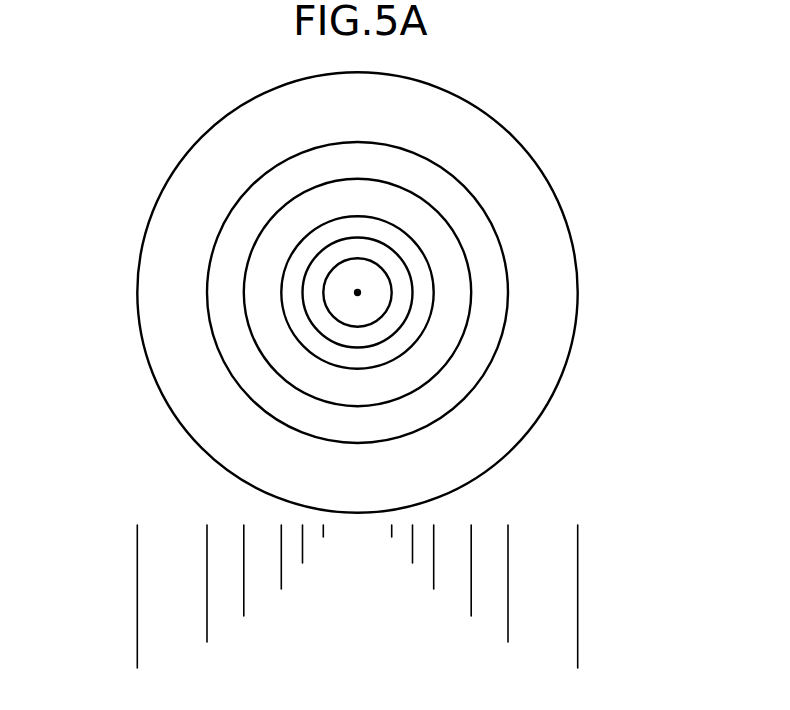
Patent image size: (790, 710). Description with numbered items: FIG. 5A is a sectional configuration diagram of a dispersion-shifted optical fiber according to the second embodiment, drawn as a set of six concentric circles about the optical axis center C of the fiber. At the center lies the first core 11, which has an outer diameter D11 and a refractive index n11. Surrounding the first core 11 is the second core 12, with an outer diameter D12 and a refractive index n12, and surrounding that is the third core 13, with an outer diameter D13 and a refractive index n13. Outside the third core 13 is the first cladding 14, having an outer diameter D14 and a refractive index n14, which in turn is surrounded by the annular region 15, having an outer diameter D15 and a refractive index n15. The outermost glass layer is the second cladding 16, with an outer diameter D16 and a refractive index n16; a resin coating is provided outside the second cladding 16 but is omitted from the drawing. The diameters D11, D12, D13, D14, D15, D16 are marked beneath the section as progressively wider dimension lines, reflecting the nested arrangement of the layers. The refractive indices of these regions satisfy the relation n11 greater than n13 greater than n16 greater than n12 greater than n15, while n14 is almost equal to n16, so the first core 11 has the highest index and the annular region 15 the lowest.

The optical axis center C is at (357, 292).
The first core 11 is at (372, 280).
The second core 12 is at (405, 290).
The third core 13 is at (427, 297).
The first cladding 14 is at (452, 307).
The annular region 15 is at (483, 344).
The second cladding 16 is at (525, 407).
The outer diameter of first core D11 is at (392, 533).
The outer diameter of second core D12 is at (412, 559).
The outer diameter of third core D13 is at (434, 585).
The outer diameter of first cladding D14 is at (471, 612).
The outer diameter of annular region D15 is at (508, 638).
The outer diameter of second cladding D16 is at (578, 664).